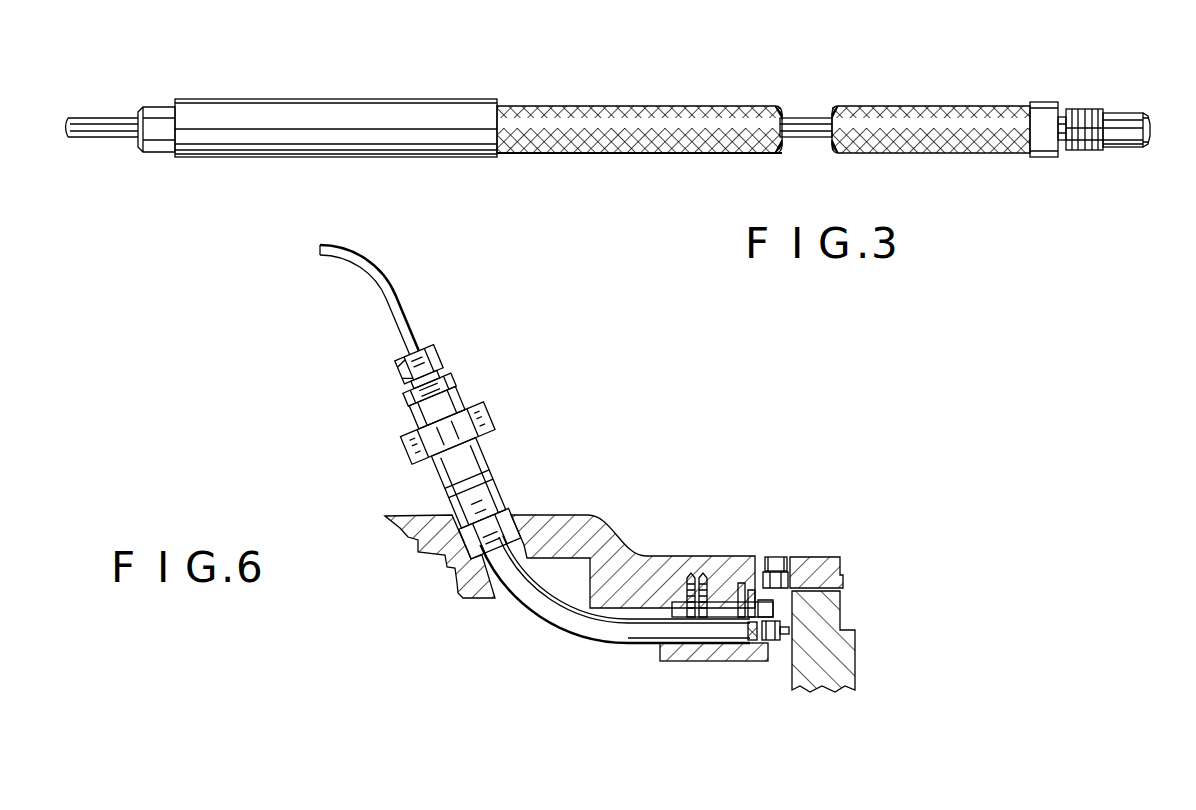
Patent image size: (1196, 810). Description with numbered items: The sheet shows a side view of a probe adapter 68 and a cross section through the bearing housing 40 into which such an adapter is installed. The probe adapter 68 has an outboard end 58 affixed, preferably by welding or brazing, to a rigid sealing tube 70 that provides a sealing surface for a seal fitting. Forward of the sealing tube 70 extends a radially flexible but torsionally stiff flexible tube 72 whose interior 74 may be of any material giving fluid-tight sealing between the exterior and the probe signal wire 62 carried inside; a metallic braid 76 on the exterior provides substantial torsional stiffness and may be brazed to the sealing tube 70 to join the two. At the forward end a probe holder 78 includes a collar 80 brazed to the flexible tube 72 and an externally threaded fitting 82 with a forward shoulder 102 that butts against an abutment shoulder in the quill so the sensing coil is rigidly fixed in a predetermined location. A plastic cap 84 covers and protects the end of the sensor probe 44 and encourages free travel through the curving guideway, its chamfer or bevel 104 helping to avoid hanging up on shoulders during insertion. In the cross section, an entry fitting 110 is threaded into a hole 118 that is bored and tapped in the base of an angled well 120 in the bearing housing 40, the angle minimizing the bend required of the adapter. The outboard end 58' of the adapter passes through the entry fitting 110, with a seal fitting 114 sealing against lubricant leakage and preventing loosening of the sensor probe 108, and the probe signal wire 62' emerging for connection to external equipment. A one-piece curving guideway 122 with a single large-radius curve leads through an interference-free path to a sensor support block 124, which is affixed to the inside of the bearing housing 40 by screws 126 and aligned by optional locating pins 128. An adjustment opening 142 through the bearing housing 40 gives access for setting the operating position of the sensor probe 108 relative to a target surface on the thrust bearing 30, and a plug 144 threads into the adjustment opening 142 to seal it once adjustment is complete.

In FIG. 3, the probe signal wire 62 is at (455, 93).
In FIG. 3, the outboard end 58 is at (158, 100).
In FIG. 3, the sealing tube 70 is at (246, 100).
In FIG. 3, the flexible tube 72 is at (667, 106).
In FIG. 3, the metallic braid 76 is at (543, 106).
In FIG. 3, the probe adapter 68 is at (553, 166).
In FIG. 3, the interior 74 is at (784, 153).
In FIG. 3, the collar 80 is at (1046, 102).
In FIG. 3, the fitting 82 is at (1088, 109).
In FIG. 3, the forward shoulder 102 is at (1105, 152).
In FIG. 3, the probe holder 78 is at (1078, 156).
In FIG. 3, the plastic cap 84 is at (1126, 113).
In FIG. 3, the sensor probe 44 is at (1124, 150).
In FIG. 3, the chamfer or bevel 104 is at (1150, 150).
In FIG. 6, the probe signal wire 62' is at (374, 293).
In FIG. 6, the outboard end 58' is at (443, 345).
In FIG. 6, the seal fitting 114 is at (456, 378).
In FIG. 6, the entry fitting 110 is at (497, 428).
In FIG. 6, the angled well 120 is at (505, 528).
In FIG. 6, the hole 118 is at (514, 538).
In FIG. 6, the bearing housing 40 is at (642, 546).
In FIG. 6, the curving guideway 122 is at (553, 612).
In FIG. 6, the screws 126 is at (690, 581).
In FIG. 6, the locating pins 128 is at (720, 581).
In FIG. 6, the sensor probe 108 is at (789, 630).
In FIG. 6, the sensor support block 124 is at (700, 662).
In FIG. 6, the adjustment opening 142 is at (818, 570).
In FIG. 6, the plug 144 is at (774, 557).
In FIG. 6, the thrust bearing 30 is at (836, 645).